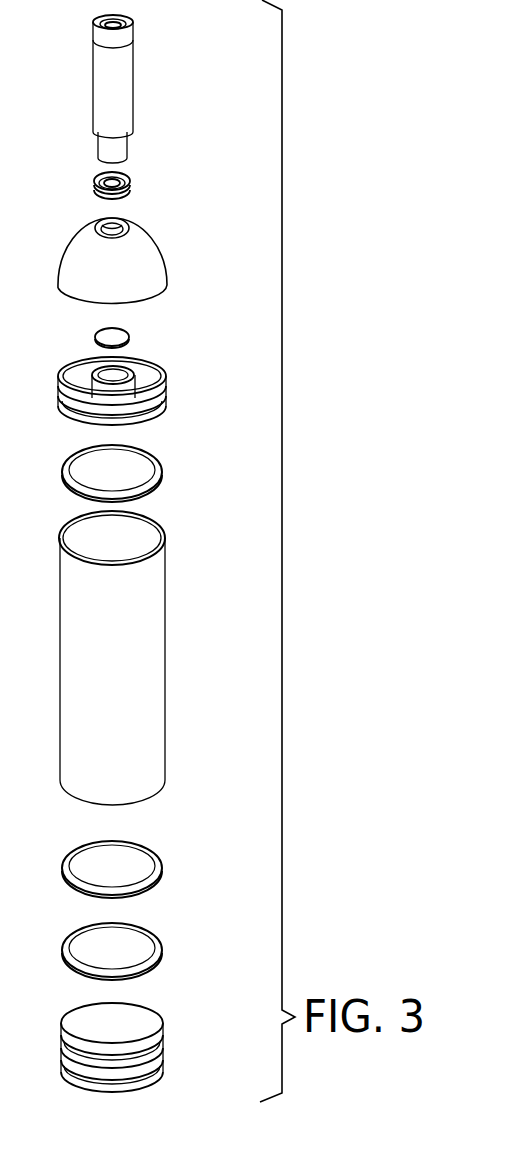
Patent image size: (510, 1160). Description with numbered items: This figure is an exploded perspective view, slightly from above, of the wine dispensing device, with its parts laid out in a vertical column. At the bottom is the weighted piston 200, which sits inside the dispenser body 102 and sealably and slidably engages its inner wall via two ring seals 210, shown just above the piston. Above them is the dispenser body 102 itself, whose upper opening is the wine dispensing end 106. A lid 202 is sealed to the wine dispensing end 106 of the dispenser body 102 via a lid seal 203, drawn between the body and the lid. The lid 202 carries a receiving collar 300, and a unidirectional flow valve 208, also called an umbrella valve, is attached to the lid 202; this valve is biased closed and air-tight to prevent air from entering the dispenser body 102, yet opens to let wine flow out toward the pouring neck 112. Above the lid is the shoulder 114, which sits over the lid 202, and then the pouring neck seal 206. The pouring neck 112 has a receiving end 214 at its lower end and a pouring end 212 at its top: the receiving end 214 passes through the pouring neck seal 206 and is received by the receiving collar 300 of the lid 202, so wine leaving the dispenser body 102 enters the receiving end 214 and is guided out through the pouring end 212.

The pouring end 212 is at (133, 28).
The pouring neck 112 is at (133, 99).
The receiving end 214 is at (127, 143).
The pouring neck seal 206 is at (130, 184).
The shoulder 114 is at (168, 272).
The unidirectional flow valve 208 is at (130, 334).
The receiving collar 300 is at (137, 392).
The lid 202 is at (150, 376).
The lid seal 203 is at (163, 472).
The wine dispensing end 106 is at (168, 545).
The dispenser body 102 is at (152, 658).
The ring seals 210 is at (163, 869).
The weighted piston 200 is at (162, 1085).